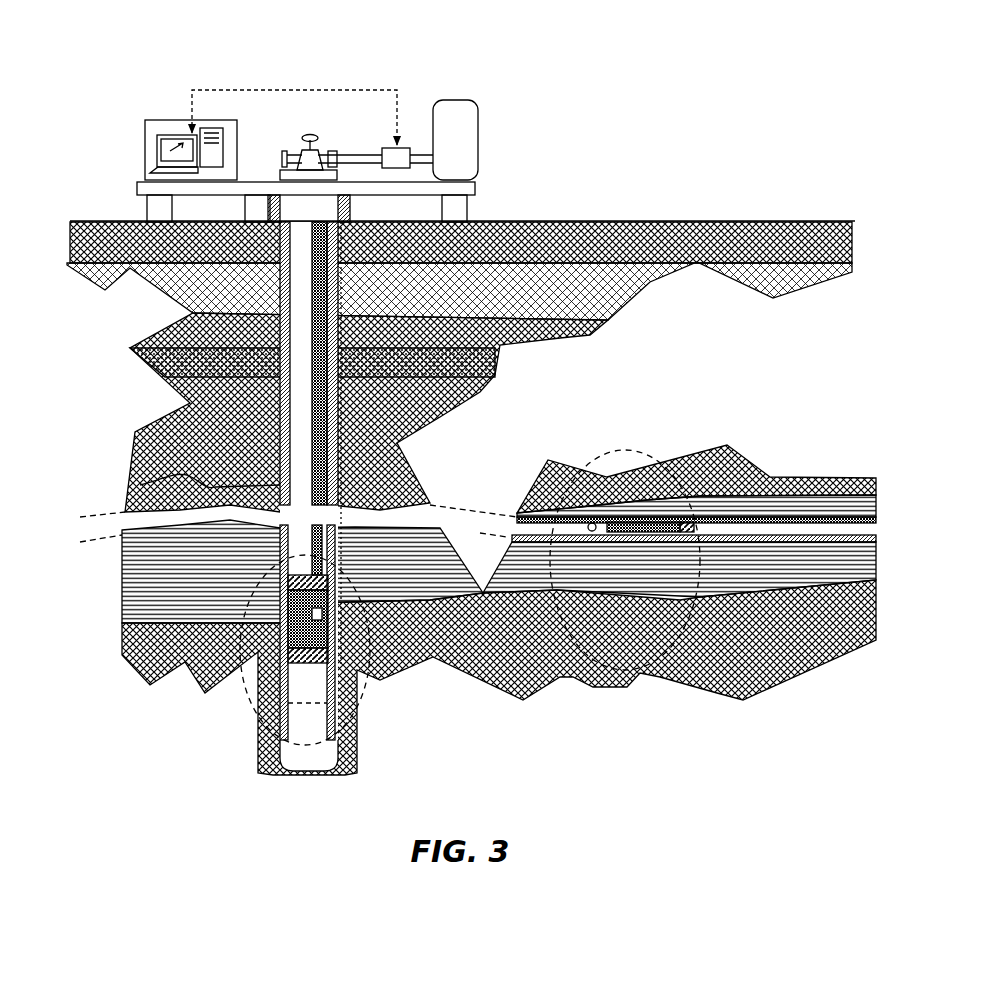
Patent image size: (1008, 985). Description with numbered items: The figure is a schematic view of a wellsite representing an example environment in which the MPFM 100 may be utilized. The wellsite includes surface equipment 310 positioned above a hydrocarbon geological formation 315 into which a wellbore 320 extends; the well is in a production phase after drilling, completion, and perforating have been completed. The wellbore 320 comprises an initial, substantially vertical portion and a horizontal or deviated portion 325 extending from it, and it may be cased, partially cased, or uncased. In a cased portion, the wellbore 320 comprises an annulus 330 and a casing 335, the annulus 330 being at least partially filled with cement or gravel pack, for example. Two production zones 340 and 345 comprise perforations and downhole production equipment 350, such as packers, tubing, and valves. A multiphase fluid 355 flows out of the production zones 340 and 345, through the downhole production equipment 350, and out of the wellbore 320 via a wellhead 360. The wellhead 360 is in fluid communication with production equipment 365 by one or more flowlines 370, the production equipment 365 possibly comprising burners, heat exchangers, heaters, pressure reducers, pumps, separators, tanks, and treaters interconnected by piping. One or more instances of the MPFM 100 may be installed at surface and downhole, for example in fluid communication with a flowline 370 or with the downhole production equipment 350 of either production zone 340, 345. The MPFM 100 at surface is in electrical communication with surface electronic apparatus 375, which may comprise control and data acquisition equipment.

The MPFM 100 is at (400, 145).
The surface equipment 310 is at (643, 57).
The hydrocarbon geological formation 315 is at (134, 432).
The wellbore 320 is at (280, 383).
The horizontal or deviated portion 325 is at (540, 700).
The annulus 330 is at (278, 300).
The casing 335 is at (287, 485).
The production zone 340 is at (278, 612).
The production zone 345 is at (655, 455).
The downhole production equipment 350 is at (347, 665).
The multiphase fluid 355 is at (341, 665).
The wellhead 360 is at (295, 142).
The production equipment 365 is at (475, 117).
The flowline 370 is at (343, 160).
The surface electronic apparatus 375 is at (144, 134).